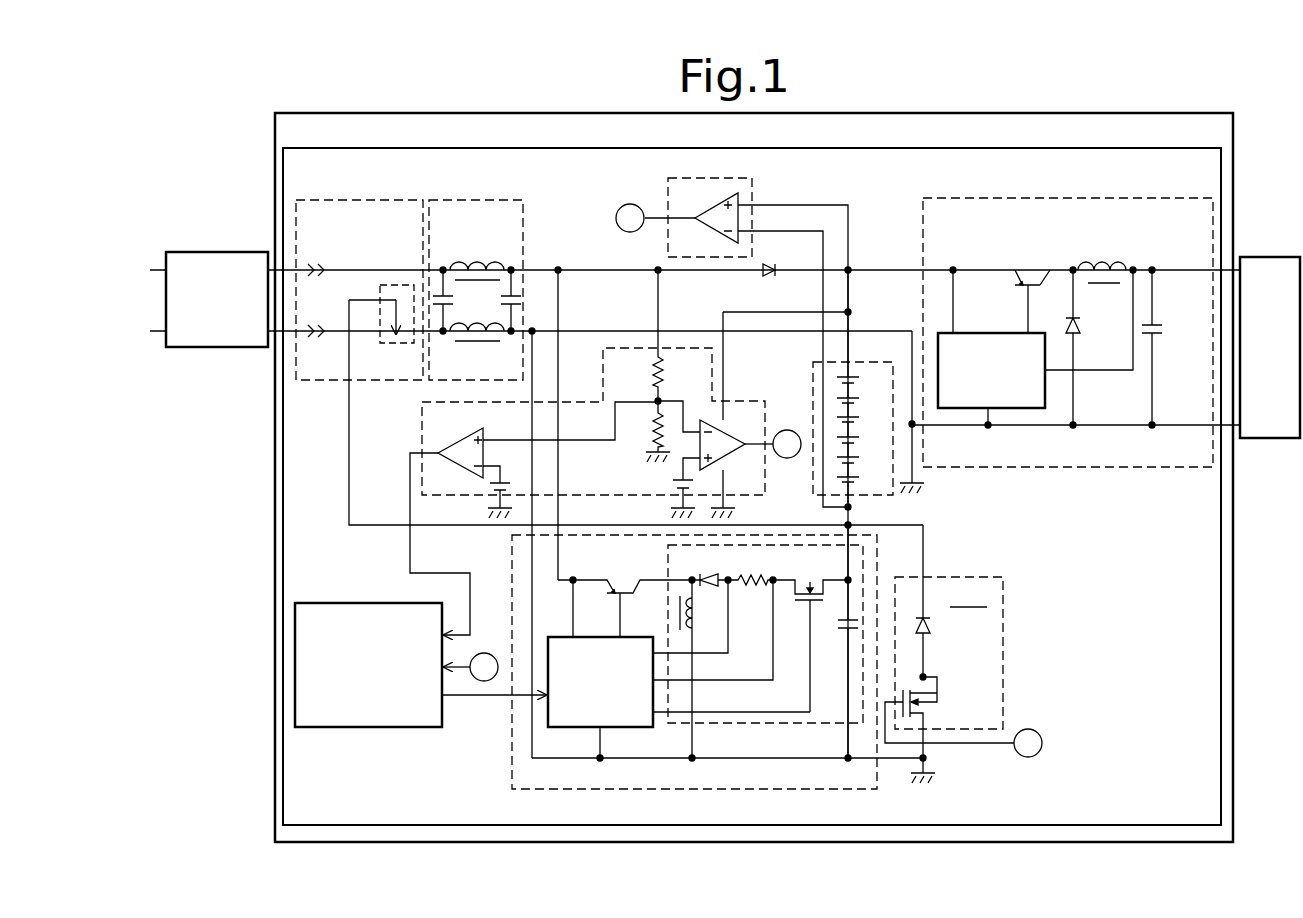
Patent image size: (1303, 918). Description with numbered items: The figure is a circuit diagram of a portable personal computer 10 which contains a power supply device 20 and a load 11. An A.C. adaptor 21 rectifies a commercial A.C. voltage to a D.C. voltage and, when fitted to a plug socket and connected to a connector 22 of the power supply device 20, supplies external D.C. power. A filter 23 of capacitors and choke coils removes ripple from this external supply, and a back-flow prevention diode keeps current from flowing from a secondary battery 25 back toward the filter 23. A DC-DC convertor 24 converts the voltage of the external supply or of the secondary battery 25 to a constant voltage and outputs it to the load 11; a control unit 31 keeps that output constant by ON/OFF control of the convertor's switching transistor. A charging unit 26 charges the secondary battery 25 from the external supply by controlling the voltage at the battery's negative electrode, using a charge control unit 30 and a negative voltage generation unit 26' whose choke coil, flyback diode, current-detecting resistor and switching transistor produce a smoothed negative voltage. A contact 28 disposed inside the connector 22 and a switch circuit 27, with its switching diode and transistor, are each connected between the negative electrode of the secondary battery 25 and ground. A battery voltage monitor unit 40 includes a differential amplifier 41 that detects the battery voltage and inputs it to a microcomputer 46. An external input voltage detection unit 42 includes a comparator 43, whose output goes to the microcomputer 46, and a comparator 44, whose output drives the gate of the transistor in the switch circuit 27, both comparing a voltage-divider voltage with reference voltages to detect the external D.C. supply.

The portable personal computer 10 is at (1105, 113).
The load 11 is at (1270, 257).
The power supply device 20 is at (1110, 148).
The A.C. adaptor 21 is at (195, 252).
The connector 22 is at (300, 380).
The filter 23 is at (503, 290).
The DC-DC convertor 24 is at (1030, 198).
The secondary battery 25 is at (813, 378).
The charging unit 26 is at (717, 671).
The negative voltage generation unit 26' is at (758, 641).
The switch circuit 27 is at (1003, 657).
The contact 28 is at (404, 345).
The charge control unit 30 is at (562, 637).
The control unit 31 is at (976, 334).
The battery voltage monitor unit 40 is at (732, 336).
The differential amplifier 41 is at (714, 208).
The external input voltage detection unit 42 is at (584, 452).
The comparator 43 is at (460, 446).
The comparator 44 is at (748, 430).
The microcomputer 46 is at (340, 603).